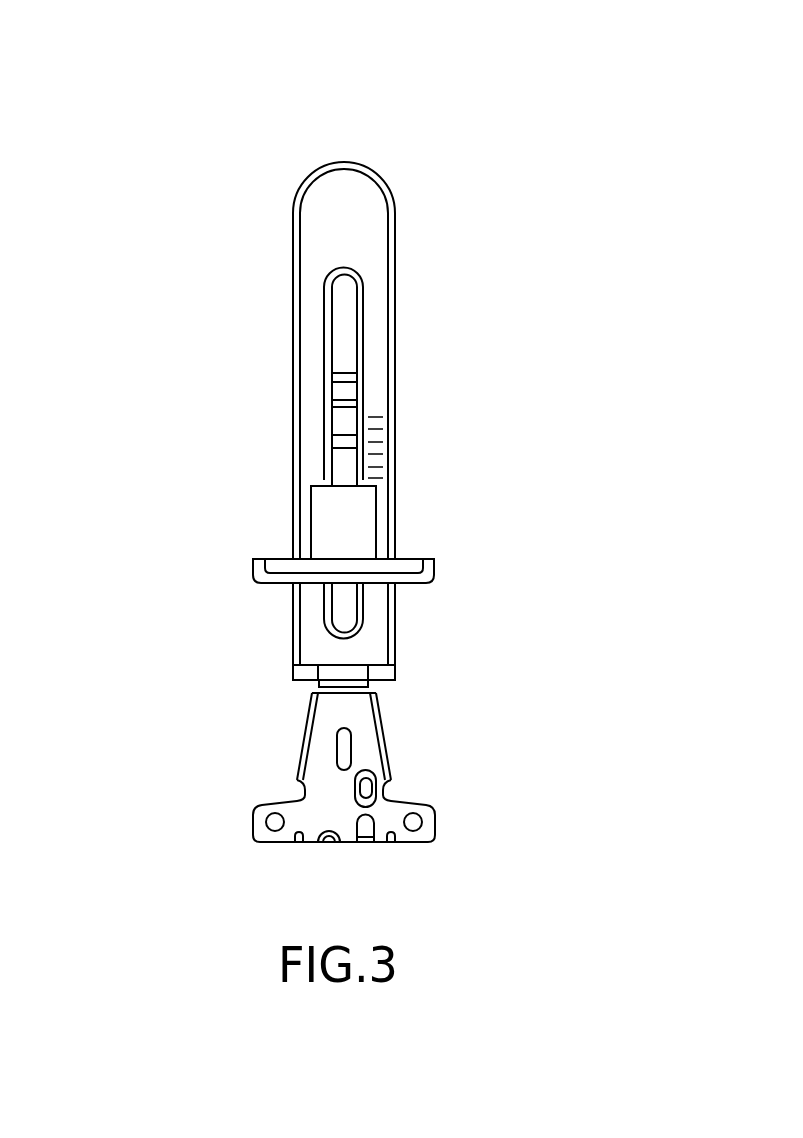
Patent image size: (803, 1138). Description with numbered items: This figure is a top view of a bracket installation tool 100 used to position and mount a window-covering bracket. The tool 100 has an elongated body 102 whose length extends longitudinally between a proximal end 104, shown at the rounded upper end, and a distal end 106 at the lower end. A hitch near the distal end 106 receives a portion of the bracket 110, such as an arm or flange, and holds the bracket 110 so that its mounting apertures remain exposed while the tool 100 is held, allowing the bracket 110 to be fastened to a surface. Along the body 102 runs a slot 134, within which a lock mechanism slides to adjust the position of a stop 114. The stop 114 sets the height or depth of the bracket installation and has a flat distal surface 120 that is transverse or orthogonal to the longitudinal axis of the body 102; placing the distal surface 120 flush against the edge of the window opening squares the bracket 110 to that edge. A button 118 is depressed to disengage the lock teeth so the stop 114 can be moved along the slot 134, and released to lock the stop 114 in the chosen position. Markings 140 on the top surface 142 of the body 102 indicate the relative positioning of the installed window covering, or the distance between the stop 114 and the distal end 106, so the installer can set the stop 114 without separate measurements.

The tool 100 is at (146, 104).
The body 102 is at (293, 226).
The proximal end 104 is at (418, 166).
The distal end 106 is at (512, 630).
The bracket 110 is at (434, 838).
The stop 114 is at (320, 523).
The button 118 is at (345, 402).
The distal surface 120 is at (272, 583).
The slot 134 is at (338, 305).
The markings 140 is at (383, 445).
The top surface 142 is at (375, 268).